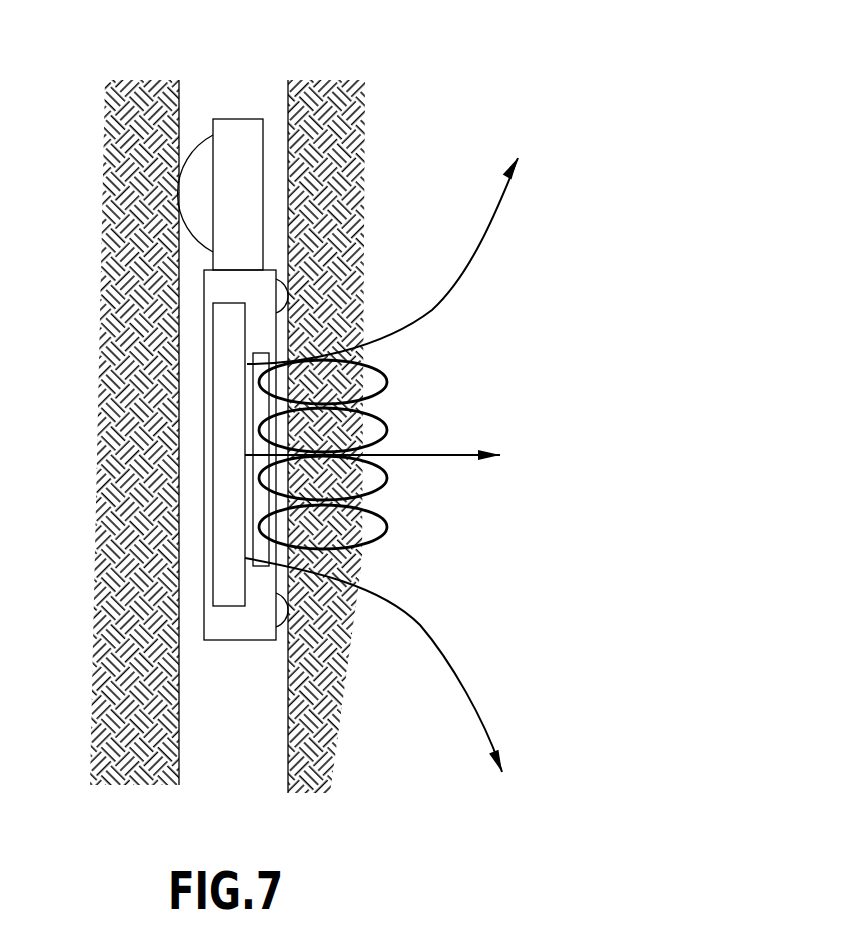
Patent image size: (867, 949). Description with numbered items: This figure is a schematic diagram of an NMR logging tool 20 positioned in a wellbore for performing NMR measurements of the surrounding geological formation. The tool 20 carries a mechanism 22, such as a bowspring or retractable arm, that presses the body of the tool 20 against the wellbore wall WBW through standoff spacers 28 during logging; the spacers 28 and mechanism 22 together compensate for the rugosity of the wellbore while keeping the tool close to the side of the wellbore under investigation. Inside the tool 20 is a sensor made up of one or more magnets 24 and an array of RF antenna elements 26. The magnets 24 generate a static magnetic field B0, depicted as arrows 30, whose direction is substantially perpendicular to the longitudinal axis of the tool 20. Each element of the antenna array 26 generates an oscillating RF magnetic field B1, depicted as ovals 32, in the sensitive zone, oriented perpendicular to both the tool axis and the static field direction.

The NMR logging tool 20 is at (205, 290).
The mechanism 22 is at (185, 156).
The magnet 24 is at (232, 502).
The array of RF antenna elements 26 is at (260, 546).
The standoff spacers 28 is at (290, 614).
The arrows depicting static magnetic field B0 30 is at (432, 310).
The ovals depicting oscillating RF magnetic field B1 32 is at (379, 479).
The wellbore wall WBW is at (165, 688).